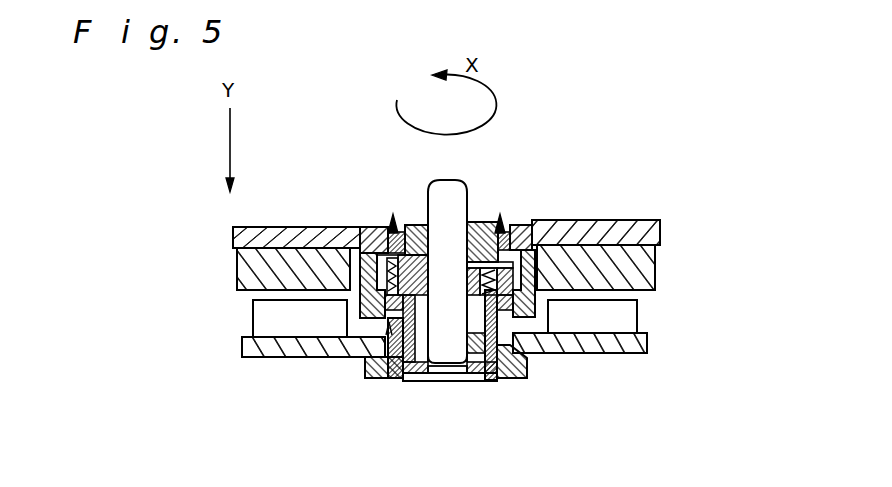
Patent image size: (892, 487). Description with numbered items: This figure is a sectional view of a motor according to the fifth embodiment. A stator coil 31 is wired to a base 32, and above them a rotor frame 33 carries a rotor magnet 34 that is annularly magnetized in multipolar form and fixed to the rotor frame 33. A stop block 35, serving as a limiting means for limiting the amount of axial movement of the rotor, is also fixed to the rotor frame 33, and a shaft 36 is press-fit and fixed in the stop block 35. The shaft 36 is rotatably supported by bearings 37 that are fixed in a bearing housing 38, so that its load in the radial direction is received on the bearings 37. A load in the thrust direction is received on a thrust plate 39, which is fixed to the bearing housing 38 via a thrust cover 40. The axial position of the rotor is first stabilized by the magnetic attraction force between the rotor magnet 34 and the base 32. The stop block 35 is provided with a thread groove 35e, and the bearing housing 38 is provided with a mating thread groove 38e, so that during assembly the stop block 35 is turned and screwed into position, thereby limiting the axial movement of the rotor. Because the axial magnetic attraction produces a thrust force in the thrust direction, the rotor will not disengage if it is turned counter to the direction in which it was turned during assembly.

The stator coil 31 is at (603, 318).
The base 32 is at (313, 357).
The rotor frame 33 is at (612, 230).
The rotor magnet 34 is at (620, 270).
The stop block 35 is at (490, 222).
The thread groove 35e is at (523, 380).
The shaft 36 is at (437, 190).
The bearings 37 is at (383, 280).
The bearing housing 38 is at (378, 375).
The thread groove 38e is at (558, 248).
The thrust plate 39 is at (473, 381).
The thrust cover 40 is at (437, 381).